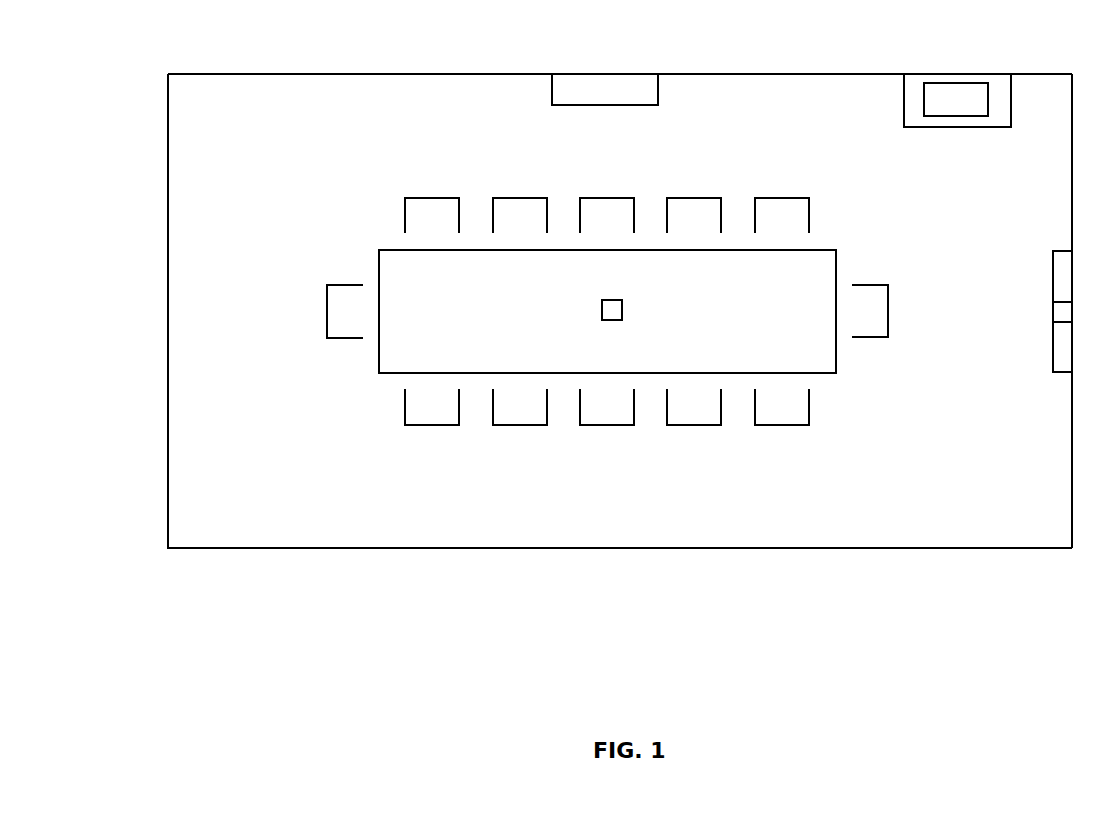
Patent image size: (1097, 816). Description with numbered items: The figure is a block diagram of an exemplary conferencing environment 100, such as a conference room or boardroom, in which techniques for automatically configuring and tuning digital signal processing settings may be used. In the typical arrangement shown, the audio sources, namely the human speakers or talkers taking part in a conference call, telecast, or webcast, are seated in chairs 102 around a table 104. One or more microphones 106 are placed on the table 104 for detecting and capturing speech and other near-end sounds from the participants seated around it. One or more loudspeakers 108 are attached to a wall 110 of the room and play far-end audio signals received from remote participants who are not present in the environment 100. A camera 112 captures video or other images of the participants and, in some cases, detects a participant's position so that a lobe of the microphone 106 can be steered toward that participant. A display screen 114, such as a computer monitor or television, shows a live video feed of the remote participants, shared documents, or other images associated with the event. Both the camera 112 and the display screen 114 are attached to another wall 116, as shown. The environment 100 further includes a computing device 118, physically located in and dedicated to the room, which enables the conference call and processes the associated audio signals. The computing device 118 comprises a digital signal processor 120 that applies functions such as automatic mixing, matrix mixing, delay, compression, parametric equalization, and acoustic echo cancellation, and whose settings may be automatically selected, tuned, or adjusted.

The conferencing environment 100 is at (136, 24).
The chairs 102 is at (416, 197).
The table 104 is at (379, 363).
The microphones 106 is at (602, 302).
The loudspeakers 108 is at (552, 92).
The wall 110 is at (448, 75).
The camera 112 is at (1053, 316).
The display screen 114 is at (1064, 250).
The wall 116 is at (1072, 445).
The computing device 118 is at (904, 106).
The digital signal processor (DSP) 120 is at (944, 117).